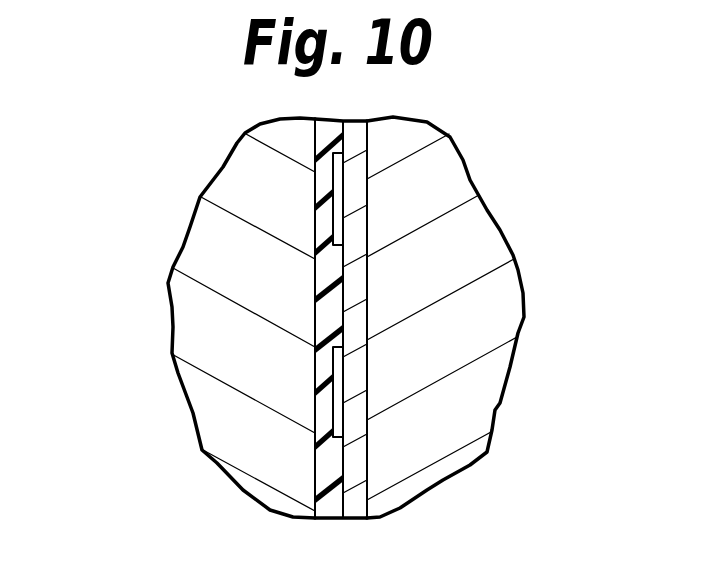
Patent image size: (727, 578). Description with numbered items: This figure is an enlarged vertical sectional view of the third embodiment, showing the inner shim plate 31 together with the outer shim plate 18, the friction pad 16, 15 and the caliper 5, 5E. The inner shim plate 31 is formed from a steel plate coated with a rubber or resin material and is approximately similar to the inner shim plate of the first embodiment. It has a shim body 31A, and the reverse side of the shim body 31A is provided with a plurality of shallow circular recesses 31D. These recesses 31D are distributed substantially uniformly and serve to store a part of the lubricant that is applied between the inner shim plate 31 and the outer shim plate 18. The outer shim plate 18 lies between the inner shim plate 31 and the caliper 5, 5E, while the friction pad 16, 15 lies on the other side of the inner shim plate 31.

The caliper 5 is at (497, 317).
The caliper portion 5E is at (481, 248).
The friction pad 16 is at (189, 318).
The friction pad member 15 is at (215, 253).
The outer shim plate 18 is at (358, 374).
The inner shim plate 31 is at (313, 470).
The shim body 31A is at (333, 315).
The recesses 31D is at (333, 200).